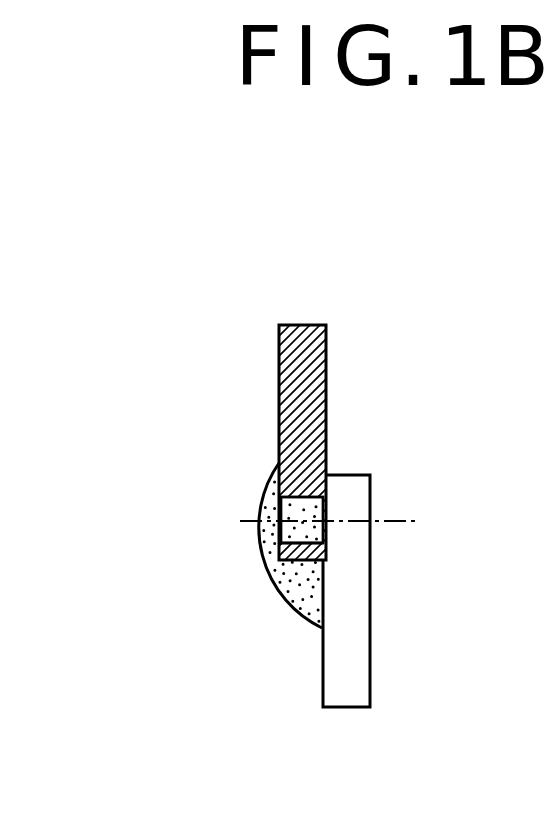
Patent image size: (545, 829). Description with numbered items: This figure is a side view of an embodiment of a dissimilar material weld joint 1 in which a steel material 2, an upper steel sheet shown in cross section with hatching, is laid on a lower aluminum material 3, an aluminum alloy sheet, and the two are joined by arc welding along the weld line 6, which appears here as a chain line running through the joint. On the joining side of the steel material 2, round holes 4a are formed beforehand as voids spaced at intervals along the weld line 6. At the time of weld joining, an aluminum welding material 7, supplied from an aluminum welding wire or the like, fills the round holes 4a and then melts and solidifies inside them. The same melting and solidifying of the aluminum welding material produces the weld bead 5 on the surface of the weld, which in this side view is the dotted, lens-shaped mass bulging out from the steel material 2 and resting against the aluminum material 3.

The dissimilar material weld joint 1 is at (410, 342).
The steel material 2 is at (327, 393).
The aluminum material 3 is at (347, 707).
The round holes 4a is at (308, 538).
The weld bead 5 is at (277, 597).
The weld line 6 is at (388, 523).
The aluminum welding material 7 is at (313, 508).